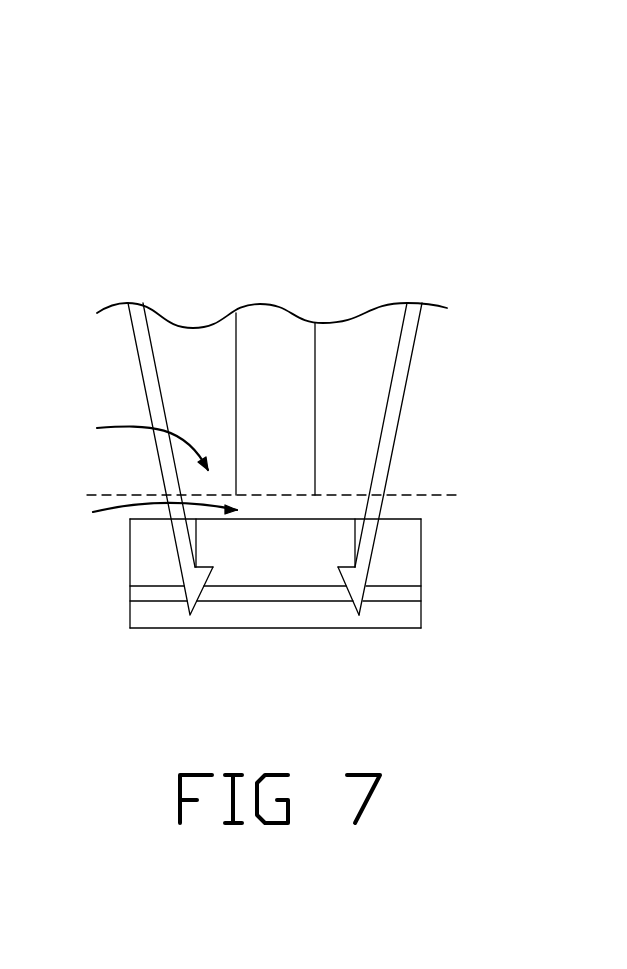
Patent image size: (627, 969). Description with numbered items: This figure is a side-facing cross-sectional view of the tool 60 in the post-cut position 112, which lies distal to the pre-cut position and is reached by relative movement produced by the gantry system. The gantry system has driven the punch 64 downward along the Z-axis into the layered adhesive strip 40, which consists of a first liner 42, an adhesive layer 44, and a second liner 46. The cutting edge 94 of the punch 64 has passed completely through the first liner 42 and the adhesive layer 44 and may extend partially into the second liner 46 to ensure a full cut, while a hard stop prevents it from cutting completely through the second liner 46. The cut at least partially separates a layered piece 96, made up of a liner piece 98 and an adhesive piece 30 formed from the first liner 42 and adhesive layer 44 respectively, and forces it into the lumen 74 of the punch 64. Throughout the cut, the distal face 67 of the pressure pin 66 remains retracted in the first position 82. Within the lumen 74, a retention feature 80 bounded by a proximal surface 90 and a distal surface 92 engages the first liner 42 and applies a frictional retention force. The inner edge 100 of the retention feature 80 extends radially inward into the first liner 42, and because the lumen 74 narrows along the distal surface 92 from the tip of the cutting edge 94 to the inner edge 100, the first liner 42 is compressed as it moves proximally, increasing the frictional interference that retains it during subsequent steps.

The post-cut position 112 is at (328, 225).
The tool 60 is at (480, 318).
The punch 64 is at (395, 405).
The pressure pin 66 is at (286, 381).
The distal face 67 is at (283, 494).
The first position 82 is at (296, 496).
The lumen 74 is at (130, 443).
The layered piece 96 is at (147, 518).
The liner piece 98 is at (325, 527).
The proximal surface 90 is at (207, 560).
The distal surface 92 is at (205, 595).
The inner edge 100 is at (337, 568).
The retention feature 80 is at (352, 578).
The cutting edge 94 is at (359, 617).
The layered adhesive strip 40 is at (463, 595).
The adhesive piece 30 is at (272, 593).
The first liner 42 is at (140, 557).
The adhesive layer 44 is at (140, 592).
The second liner 46 is at (140, 619).